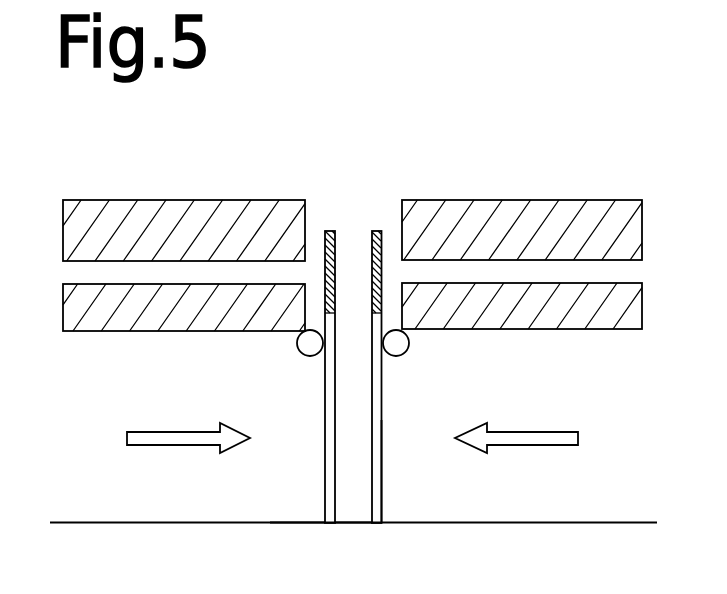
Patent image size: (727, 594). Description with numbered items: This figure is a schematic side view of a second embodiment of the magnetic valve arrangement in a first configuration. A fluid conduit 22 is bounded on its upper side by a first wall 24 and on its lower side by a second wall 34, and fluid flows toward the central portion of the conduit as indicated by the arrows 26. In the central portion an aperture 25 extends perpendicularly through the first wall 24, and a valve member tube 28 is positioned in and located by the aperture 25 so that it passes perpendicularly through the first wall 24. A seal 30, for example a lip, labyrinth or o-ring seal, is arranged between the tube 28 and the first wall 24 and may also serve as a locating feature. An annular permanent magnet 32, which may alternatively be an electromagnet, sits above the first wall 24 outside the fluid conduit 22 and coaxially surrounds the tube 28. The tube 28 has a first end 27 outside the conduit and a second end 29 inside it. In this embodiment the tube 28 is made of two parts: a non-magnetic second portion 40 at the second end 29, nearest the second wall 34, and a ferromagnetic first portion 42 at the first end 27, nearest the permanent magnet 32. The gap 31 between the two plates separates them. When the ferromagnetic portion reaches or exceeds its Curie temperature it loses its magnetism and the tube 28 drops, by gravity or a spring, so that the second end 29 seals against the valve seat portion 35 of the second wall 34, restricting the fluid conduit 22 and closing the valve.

The fluid conduit 22 is at (150, 484).
The first wall 24 is at (125, 317).
The aperture 25 is at (317, 308).
The arrows 26 is at (193, 435).
The first end 27 is at (378, 232).
The valve member tube 28 is at (382, 450).
The second end 29 is at (377, 499).
The seal 30 is at (408, 350).
The gap between plates 31 is at (357, 412).
The permanent magnet 32 is at (482, 208).
The second wall 34 is at (282, 523).
The valve seat portion 35 is at (352, 523).
The non-magnetic second portion 40 is at (327, 450).
The ferromagnetic first portion 42 is at (373, 231).